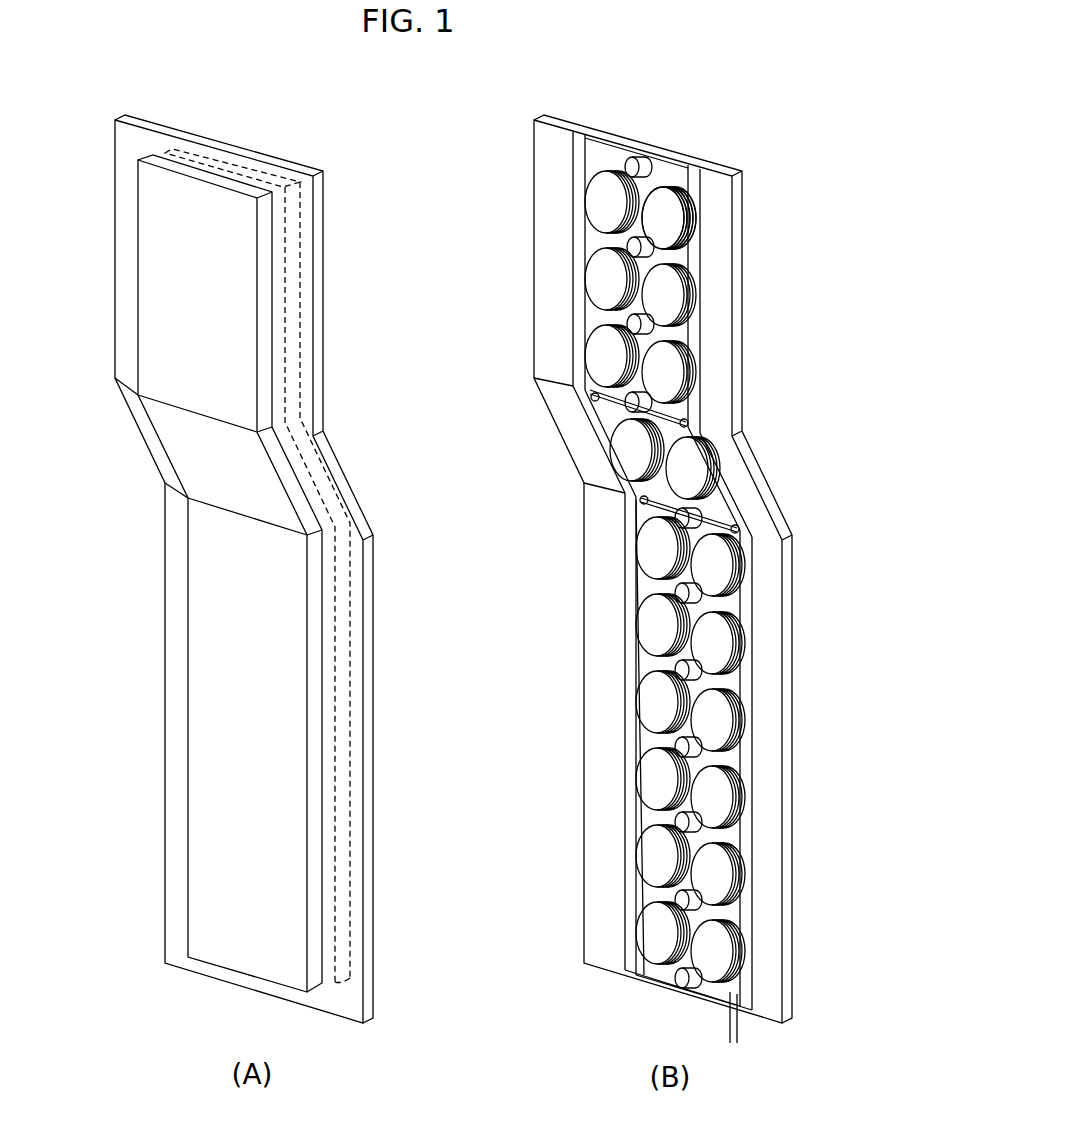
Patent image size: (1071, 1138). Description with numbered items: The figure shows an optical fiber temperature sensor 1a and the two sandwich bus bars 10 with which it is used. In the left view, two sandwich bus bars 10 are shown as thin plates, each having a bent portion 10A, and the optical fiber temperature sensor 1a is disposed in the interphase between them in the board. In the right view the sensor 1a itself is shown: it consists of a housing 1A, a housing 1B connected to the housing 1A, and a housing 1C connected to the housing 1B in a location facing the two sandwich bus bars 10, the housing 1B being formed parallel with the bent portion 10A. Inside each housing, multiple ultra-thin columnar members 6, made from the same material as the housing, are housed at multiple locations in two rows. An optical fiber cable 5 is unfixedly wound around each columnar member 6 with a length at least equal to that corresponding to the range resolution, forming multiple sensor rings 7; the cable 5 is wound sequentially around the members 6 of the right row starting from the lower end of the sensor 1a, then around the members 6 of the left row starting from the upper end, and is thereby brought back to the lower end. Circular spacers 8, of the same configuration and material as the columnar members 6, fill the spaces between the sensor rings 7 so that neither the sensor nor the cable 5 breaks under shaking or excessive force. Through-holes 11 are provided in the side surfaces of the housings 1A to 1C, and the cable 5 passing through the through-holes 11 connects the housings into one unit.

The optical fiber temperature sensor 1a is at (115, 147).
The sandwich bus bar 10 is at (234, 164).
The bent portion 10A is at (190, 457).
The housing 1A is at (602, 158).
The housing 1B is at (620, 413).
The housing 1C is at (651, 578).
The optical fiber cable 5 is at (690, 322).
The ultra-thin columnar member 6 is at (720, 577).
The sensor ring 7 is at (668, 187).
The circular spacer 8 is at (632, 166).
The through-hole 11 is at (595, 398).